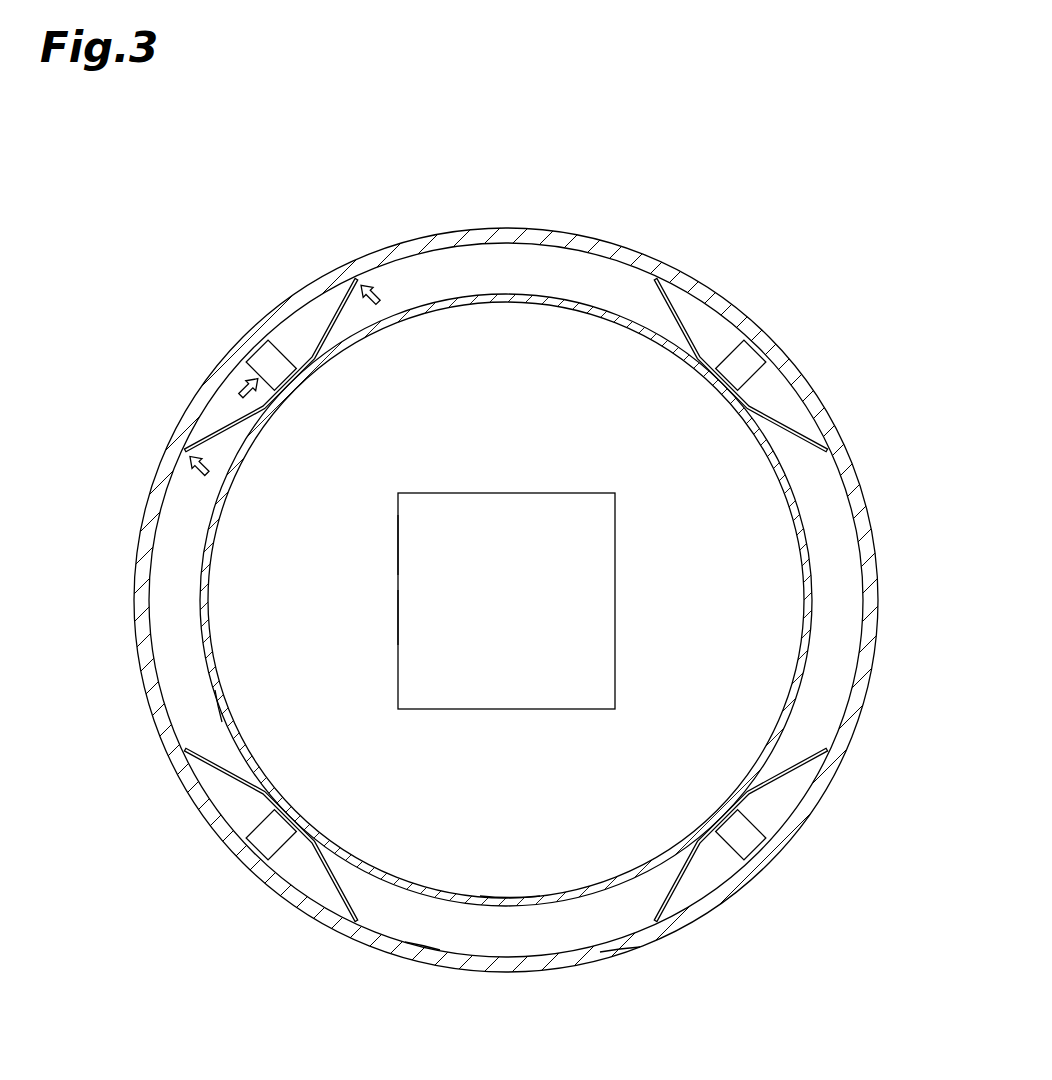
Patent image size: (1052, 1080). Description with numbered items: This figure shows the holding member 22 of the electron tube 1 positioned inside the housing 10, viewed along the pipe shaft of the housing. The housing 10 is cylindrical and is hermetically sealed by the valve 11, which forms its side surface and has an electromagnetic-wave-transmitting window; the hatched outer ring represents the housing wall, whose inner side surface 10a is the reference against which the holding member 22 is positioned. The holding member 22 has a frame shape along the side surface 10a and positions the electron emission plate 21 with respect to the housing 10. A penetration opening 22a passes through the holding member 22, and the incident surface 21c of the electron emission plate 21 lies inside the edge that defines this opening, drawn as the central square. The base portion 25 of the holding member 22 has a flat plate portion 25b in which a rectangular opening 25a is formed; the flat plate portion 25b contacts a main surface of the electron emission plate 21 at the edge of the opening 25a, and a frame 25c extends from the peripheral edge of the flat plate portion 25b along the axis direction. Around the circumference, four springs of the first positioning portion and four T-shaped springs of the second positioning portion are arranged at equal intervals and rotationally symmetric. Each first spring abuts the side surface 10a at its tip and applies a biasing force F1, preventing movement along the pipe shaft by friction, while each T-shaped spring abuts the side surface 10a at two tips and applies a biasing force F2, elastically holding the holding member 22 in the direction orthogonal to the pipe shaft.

The electron tube 1 is at (506, 582).
The housing 10 is at (580, 958).
The inner side surface of the housing 10a is at (420, 942).
The valve 11 is at (620, 948).
The electron emission plate 21 is at (563, 650).
The incident surface 21c is at (560, 550).
The holding member 22 is at (822, 566).
The penetration opening 22a is at (400, 560).
The base portion 25 is at (514, 300).
The opening 25a is at (400, 628).
The flat plate portion 25b is at (513, 840).
The frame 25c is at (232, 704).
The biasing force F1 is at (242, 394).
The biasing force F2 is at (297, 392).